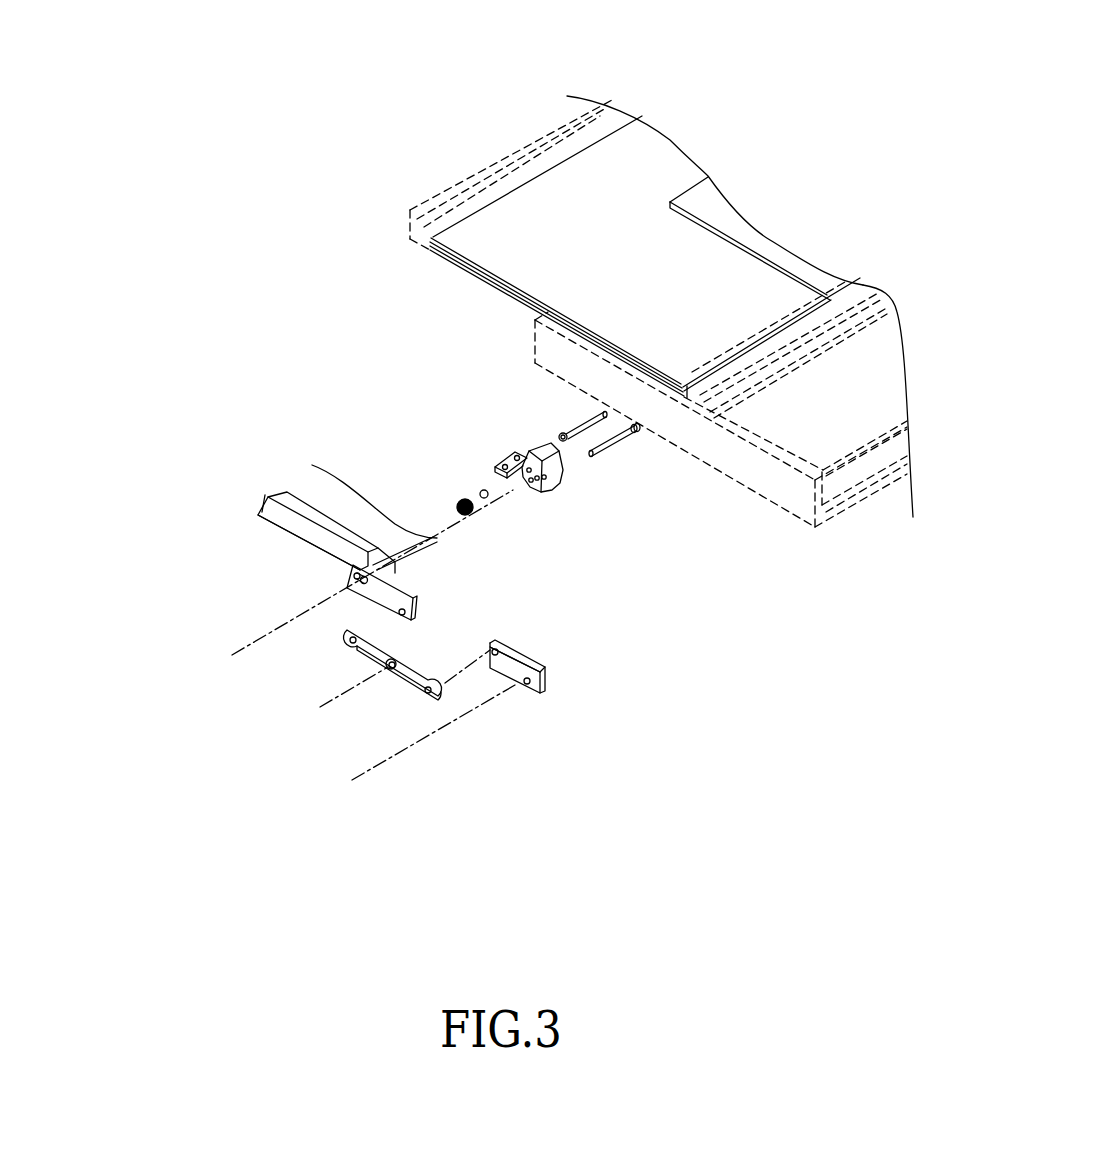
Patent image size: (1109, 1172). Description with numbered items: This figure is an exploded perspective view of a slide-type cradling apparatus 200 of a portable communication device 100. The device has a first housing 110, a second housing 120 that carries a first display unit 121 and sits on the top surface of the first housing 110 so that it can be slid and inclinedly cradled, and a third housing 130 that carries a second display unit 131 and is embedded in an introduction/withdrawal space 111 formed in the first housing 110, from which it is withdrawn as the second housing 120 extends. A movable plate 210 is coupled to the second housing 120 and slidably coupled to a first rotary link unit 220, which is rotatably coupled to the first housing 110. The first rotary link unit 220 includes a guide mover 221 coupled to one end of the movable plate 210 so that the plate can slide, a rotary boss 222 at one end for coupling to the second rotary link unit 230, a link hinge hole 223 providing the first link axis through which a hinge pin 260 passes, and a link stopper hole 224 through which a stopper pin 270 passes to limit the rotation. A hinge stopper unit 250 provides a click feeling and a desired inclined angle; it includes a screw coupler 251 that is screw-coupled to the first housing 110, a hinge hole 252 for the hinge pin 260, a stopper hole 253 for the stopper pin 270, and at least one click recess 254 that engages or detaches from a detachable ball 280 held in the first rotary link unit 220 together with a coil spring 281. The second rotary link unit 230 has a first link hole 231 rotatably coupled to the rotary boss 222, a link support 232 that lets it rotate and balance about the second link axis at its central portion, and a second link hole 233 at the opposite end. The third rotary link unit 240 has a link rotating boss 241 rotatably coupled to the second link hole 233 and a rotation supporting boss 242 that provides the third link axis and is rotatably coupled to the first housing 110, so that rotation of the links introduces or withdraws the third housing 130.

The portable communication device 100 is at (755, 76).
The first housing 110 is at (536, 337).
The introduction/withdrawal space 111 is at (824, 496).
The second housing 120 is at (453, 188).
The first display unit 121 is at (497, 187).
The third housing 130 is at (837, 442).
The second display unit 131 is at (878, 327).
The movable plate 210 is at (580, 168).
The slide-type cradling apparatus 200 is at (122, 854).
The first rotary link unit 220 is at (178, 485).
The guide mover 221 is at (283, 494).
The rotary boss 222 is at (400, 613).
The link hinge hole 223 is at (363, 580).
The link stopper hole 224 is at (348, 583).
The second rotary link unit 230 is at (182, 658).
The first link hole 231 is at (350, 641).
The link support 232 is at (386, 669).
The second link hole 233 is at (428, 692).
The third rotary link unit 240 is at (478, 810).
The link rotating boss 241 is at (495, 655).
The rotation supporting boss 242 is at (527, 684).
The hinge stopper unit 250 is at (652, 489).
The screw coupler 251 is at (563, 472).
The hinge hole 252 is at (543, 492).
The stopper hole 253 is at (545, 500).
The click recess 254 is at (530, 493).
The hinge pin 260 is at (618, 451).
The stopper pin 270 is at (562, 432).
The detachable ball 280 is at (481, 490).
The coil spring 281 is at (457, 504).